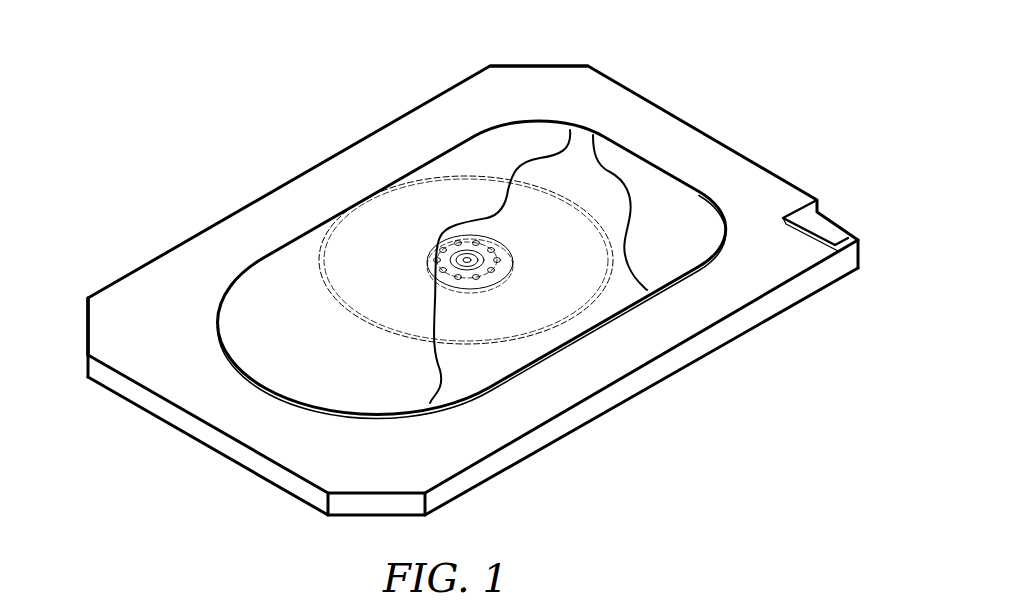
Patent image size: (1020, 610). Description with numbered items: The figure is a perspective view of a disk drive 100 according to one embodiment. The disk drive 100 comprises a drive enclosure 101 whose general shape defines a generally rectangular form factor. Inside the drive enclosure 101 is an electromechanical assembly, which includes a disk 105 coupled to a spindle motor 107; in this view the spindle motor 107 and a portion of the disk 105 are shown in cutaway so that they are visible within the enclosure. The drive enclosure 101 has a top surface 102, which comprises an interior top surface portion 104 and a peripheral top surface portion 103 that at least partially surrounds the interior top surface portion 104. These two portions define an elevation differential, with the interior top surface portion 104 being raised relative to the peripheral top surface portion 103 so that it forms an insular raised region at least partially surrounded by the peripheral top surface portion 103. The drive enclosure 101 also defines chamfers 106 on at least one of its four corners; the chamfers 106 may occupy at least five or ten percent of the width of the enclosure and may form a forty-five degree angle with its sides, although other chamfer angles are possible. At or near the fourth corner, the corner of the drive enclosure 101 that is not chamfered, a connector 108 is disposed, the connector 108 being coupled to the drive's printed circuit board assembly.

The disk drive 100 is at (204, 166).
The drive enclosure 101 is at (703, 132).
The top surface 102 is at (642, 353).
The peripheral top surface portion 103 is at (377, 167).
The interior top surface portion 104 is at (367, 397).
The disk 105 is at (542, 327).
The chamfers 106 is at (563, 66).
The spindle motor 107 is at (480, 253).
The connector 108 is at (837, 220).